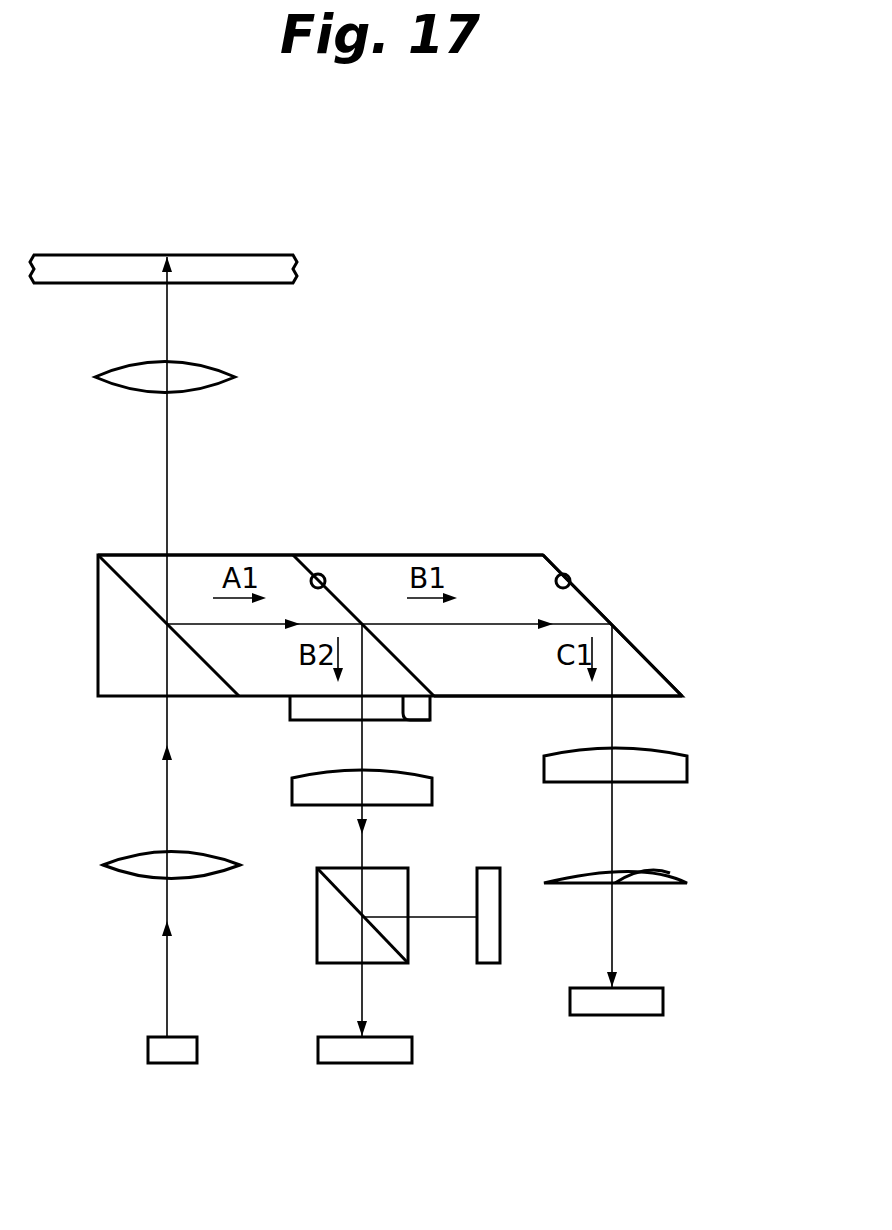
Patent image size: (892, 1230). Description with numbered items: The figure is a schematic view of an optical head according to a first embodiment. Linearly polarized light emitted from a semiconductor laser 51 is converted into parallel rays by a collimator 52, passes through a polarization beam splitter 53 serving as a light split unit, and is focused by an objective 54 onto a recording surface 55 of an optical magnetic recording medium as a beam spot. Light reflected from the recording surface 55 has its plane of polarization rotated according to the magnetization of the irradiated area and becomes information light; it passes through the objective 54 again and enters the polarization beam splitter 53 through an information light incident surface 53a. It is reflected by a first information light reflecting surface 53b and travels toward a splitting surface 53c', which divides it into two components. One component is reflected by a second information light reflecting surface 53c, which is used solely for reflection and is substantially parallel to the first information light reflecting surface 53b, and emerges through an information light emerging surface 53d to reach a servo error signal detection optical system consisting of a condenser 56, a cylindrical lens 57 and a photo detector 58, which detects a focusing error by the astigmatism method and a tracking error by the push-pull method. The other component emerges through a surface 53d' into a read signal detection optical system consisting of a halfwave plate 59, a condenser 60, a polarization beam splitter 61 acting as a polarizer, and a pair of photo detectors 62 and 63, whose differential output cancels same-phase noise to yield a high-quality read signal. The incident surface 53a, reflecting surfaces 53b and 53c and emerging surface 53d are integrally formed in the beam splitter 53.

The semiconductor laser 51 is at (148, 1054).
The collimator 52 is at (114, 861).
The polarization beam splitter 53 is at (351, 628).
The information light incident surface 53a is at (202, 554).
The first information light reflecting surface 53b is at (127, 579).
The second information light reflecting surface 53c is at (612, 612).
The splitting surface 53c' is at (363, 600).
The information light emerging surface 53d is at (558, 721).
The surface 53d' is at (450, 730).
The objective 54 is at (114, 371).
The recording surface 55 is at (133, 254).
The condenser 56 is at (686, 766).
The cylindrical lens 57 is at (678, 870).
The photo detector 58 is at (668, 994).
The halfwave plate 59 is at (288, 706).
The condenser 60 is at (296, 788).
The polarization beam splitter 61 is at (316, 924).
The photo detector 62 is at (322, 1052).
The photo detector 63 is at (488, 964).